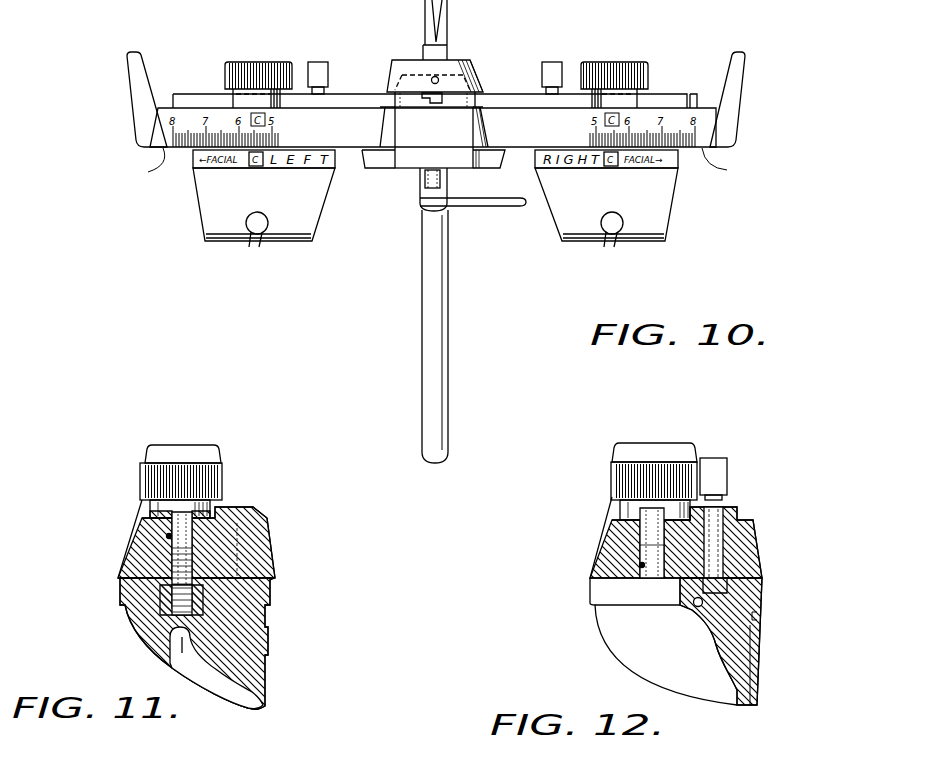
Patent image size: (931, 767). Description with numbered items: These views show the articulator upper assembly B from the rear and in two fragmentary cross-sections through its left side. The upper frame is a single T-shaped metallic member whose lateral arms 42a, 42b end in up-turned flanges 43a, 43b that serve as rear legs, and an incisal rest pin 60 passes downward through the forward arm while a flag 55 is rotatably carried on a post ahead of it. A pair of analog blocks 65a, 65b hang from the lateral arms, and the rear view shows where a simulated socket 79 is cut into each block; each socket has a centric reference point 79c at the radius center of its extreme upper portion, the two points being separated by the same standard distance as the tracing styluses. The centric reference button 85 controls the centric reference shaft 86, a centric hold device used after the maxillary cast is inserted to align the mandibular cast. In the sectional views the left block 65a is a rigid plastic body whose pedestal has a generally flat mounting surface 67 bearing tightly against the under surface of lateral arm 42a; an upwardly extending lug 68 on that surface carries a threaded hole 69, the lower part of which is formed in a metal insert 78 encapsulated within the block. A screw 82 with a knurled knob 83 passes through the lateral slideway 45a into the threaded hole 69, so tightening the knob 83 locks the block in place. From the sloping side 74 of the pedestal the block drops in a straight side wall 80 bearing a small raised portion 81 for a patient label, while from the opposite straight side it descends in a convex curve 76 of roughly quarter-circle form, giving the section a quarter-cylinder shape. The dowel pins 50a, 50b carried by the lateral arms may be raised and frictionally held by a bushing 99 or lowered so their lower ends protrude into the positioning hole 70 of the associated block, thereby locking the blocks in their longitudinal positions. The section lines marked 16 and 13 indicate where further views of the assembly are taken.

In FIG. 10, the section line 16 is at (433, 11).
In FIG. 10, the up-turned flange 43a is at (136, 80).
In FIG. 11, the up-turned flange 43a is at (162, 445).
In FIG. 12, the up-turned flange 43a is at (658, 443).
In FIG. 10, the up-turned flange 43b is at (740, 63).
In FIG. 10, the knurled knob 83 is at (240, 62).
In FIG. 11, the knurled knob 83 is at (195, 487).
In FIG. 12, the knurled knob 83 is at (620, 476).
In FIG. 10, the dowel pin 50a is at (319, 62).
In FIG. 12, the dowel pin 50a is at (728, 474).
In FIG. 10, the dowel pin 50b is at (552, 62).
In FIG. 10, the centric reference button 85 is at (465, 60).
In FIG. 10, the lateral arm 42a is at (131, 171).
In FIG. 12, the lateral arm 42a is at (743, 557).
In FIG. 10, the lateral arm 42b is at (738, 171).
In FIG. 10, the analog block 65a is at (198, 205).
In FIG. 11, the analog block 65a is at (270, 660).
In FIG. 12, the analog block 65a is at (622, 648).
In FIG. 10, the analog block 65b is at (670, 210).
In FIG. 10, the simulated socket 79 is at (254, 247).
In FIG. 11, the simulated socket 79 is at (235, 690).
In FIG. 10, the centric reference shaft 86 is at (428, 180).
In FIG. 10, the flag 55 is at (510, 207).
In FIG. 10, the incisal rest pin 60 is at (424, 350).
In FIG. 10, the articulator upper assembly B is at (280, 288).
In FIG. 11, the lateral slideway 45a is at (167, 535).
In FIG. 12, the lateral slideway 45a is at (640, 565).
In FIG. 11, the threaded hole 69 is at (172, 560).
In FIG. 11, the screw 82 is at (186, 530).
In FIG. 12, the screw 82 is at (650, 535).
In FIG. 11, the mounting surface 67 is at (245, 568).
In FIG. 11, the metal insert 78 is at (165, 592).
In FIG. 11, the sloping side 74 is at (276, 593).
In FIG. 11, the convex curve 76 is at (128, 625).
In FIG. 11, the centric reference point 79c is at (168, 666).
In FIG. 11, the raised portion 81 is at (270, 635).
In FIG. 11, the straight side wall 80 is at (268, 685).
In FIG. 12, the bushing 99 is at (727, 533).
In FIG. 12, the lug 68 is at (655, 572).
In FIG. 12, the positioning hole 70 is at (697, 606).
In FIG. 12, the section line 13 is at (548, 578).